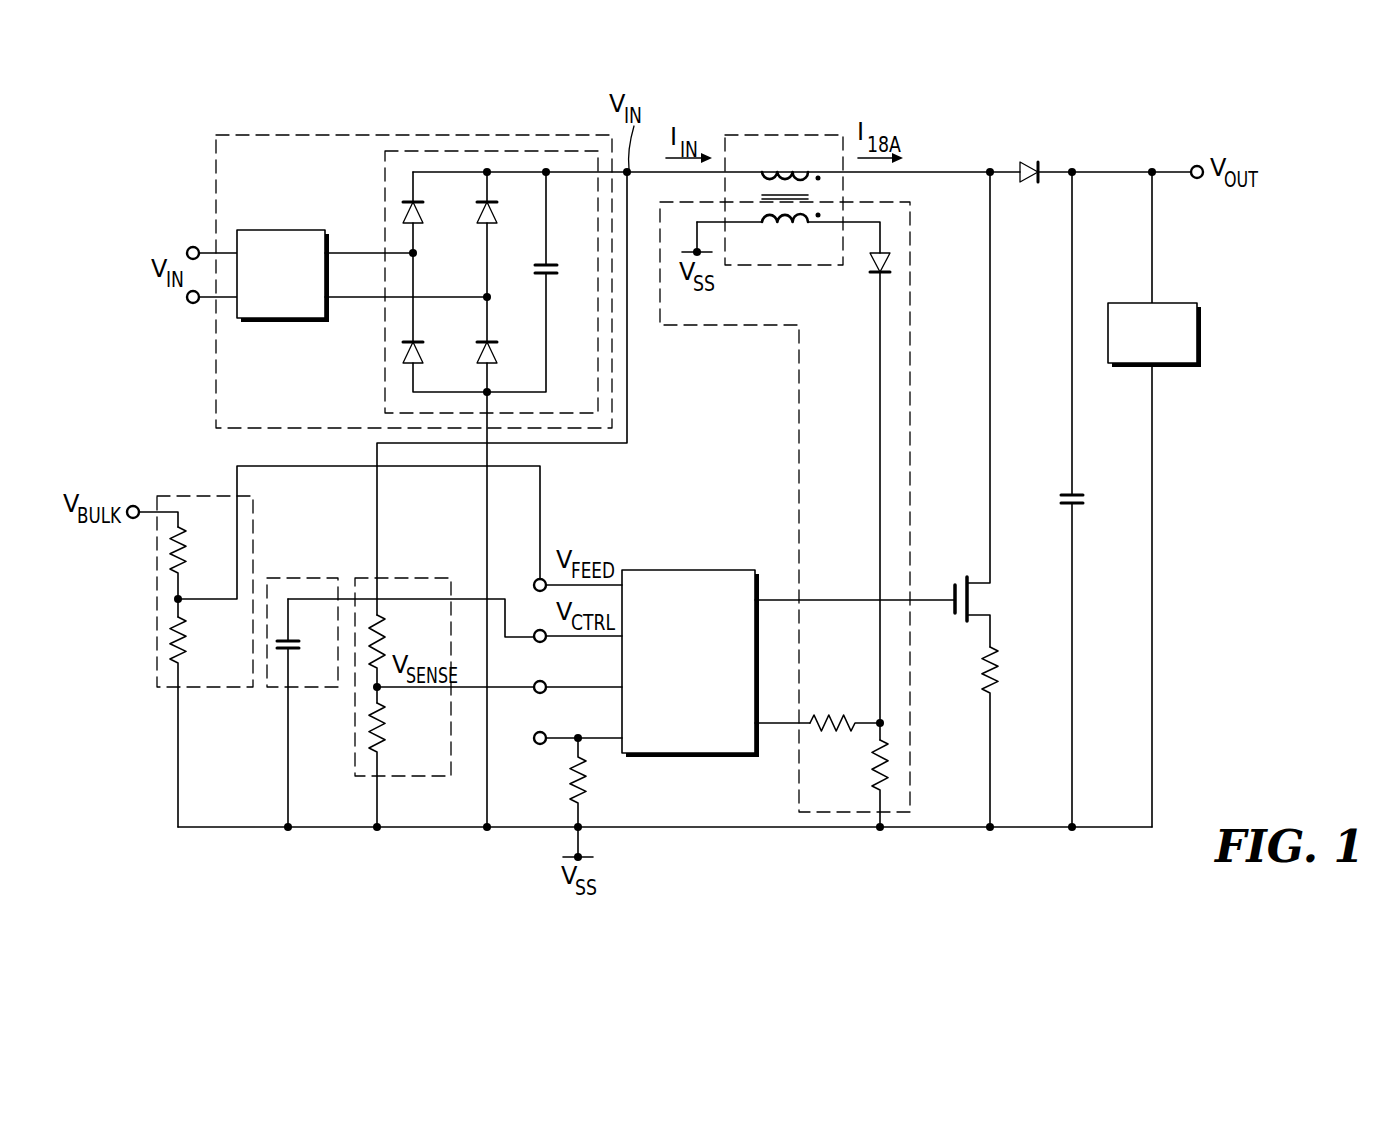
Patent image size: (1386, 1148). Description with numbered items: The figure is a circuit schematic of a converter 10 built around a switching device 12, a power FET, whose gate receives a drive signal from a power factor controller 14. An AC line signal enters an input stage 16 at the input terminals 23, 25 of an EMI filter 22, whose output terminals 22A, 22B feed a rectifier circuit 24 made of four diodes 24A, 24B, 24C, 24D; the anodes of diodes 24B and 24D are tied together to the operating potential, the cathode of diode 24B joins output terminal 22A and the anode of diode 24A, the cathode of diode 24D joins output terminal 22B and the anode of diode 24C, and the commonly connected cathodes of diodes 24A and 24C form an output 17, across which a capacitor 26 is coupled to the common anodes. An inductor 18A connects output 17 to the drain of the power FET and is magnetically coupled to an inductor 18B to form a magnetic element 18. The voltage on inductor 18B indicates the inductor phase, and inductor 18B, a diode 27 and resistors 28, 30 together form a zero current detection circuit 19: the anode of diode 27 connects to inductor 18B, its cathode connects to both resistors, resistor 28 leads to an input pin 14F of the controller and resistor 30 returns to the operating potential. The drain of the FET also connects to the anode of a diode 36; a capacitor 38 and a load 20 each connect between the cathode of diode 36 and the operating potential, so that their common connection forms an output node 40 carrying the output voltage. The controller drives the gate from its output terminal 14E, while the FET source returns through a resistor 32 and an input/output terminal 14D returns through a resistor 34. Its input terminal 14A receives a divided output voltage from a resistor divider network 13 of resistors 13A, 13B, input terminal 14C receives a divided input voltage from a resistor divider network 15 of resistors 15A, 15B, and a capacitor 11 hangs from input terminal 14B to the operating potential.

The converter 10 is at (1304, 776).
The capacitor 11 is at (298, 640).
The switching device 12 is at (985, 600).
The resistor divider network 13 is at (253, 520).
The resistor 13A is at (186, 556).
The resistor 13B is at (188, 652).
The power factor controller 14 is at (673, 760).
The input terminal 14A is at (534, 583).
The input terminal 14B is at (546, 641).
The input terminal 14C is at (546, 692).
The input/output terminal 14D is at (540, 746).
The output terminal 14E is at (780, 598).
The input pin 14F is at (780, 725).
The resistor divider network 15 is at (432, 578).
The resistor 15A is at (384, 628).
The resistor 15B is at (384, 716).
The input stage 16 is at (214, 170).
The output 17 is at (614, 183).
The magnetic element 18 is at (788, 220).
The inductor 18A is at (785, 172).
The inductor 18B is at (788, 236).
The zero current detection circuit 19 is at (723, 326).
The load 20 is at (1201, 331).
The EMI filter 22 is at (278, 230).
The output terminal 22A is at (353, 252).
The output terminal 22B is at (357, 298).
The input terminal 23 is at (194, 246).
The rectifier circuit 24 is at (385, 196).
The diode 24A is at (421, 203).
The diode 24B is at (417, 343).
The diode 24C is at (493, 203).
The diode 24D is at (490, 343).
The input terminal 25 is at (193, 304).
The capacitor 26 is at (557, 266).
The diode 27 is at (878, 273).
The resistor 28 is at (840, 716).
The resistor 30 is at (873, 771).
The resistor 32 is at (998, 672).
The resistor 34 is at (588, 790).
The diode 36 is at (1040, 168).
The capacitor 38 is at (1083, 500).
The output node 40 is at (1195, 166).